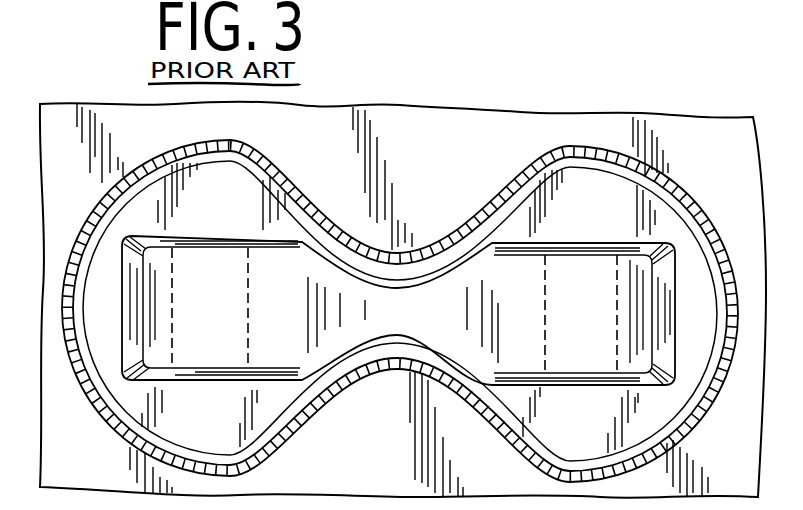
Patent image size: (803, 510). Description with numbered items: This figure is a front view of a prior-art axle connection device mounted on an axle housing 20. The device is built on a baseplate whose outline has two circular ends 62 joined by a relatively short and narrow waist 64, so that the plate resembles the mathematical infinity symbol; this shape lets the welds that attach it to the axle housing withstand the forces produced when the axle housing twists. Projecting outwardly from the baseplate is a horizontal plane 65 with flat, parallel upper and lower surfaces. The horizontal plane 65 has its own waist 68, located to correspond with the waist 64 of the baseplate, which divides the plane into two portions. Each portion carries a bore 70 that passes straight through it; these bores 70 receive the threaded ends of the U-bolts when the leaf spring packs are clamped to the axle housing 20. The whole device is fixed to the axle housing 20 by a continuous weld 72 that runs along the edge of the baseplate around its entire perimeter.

The axle housing 20 is at (470, 158).
The circular ends 62 is at (137, 207).
The waist 64 is at (378, 352).
The horizontal plane 65 is at (287, 318).
The waist 68 is at (420, 319).
The bore 70 is at (218, 318).
The continuous weld 72 is at (586, 167).